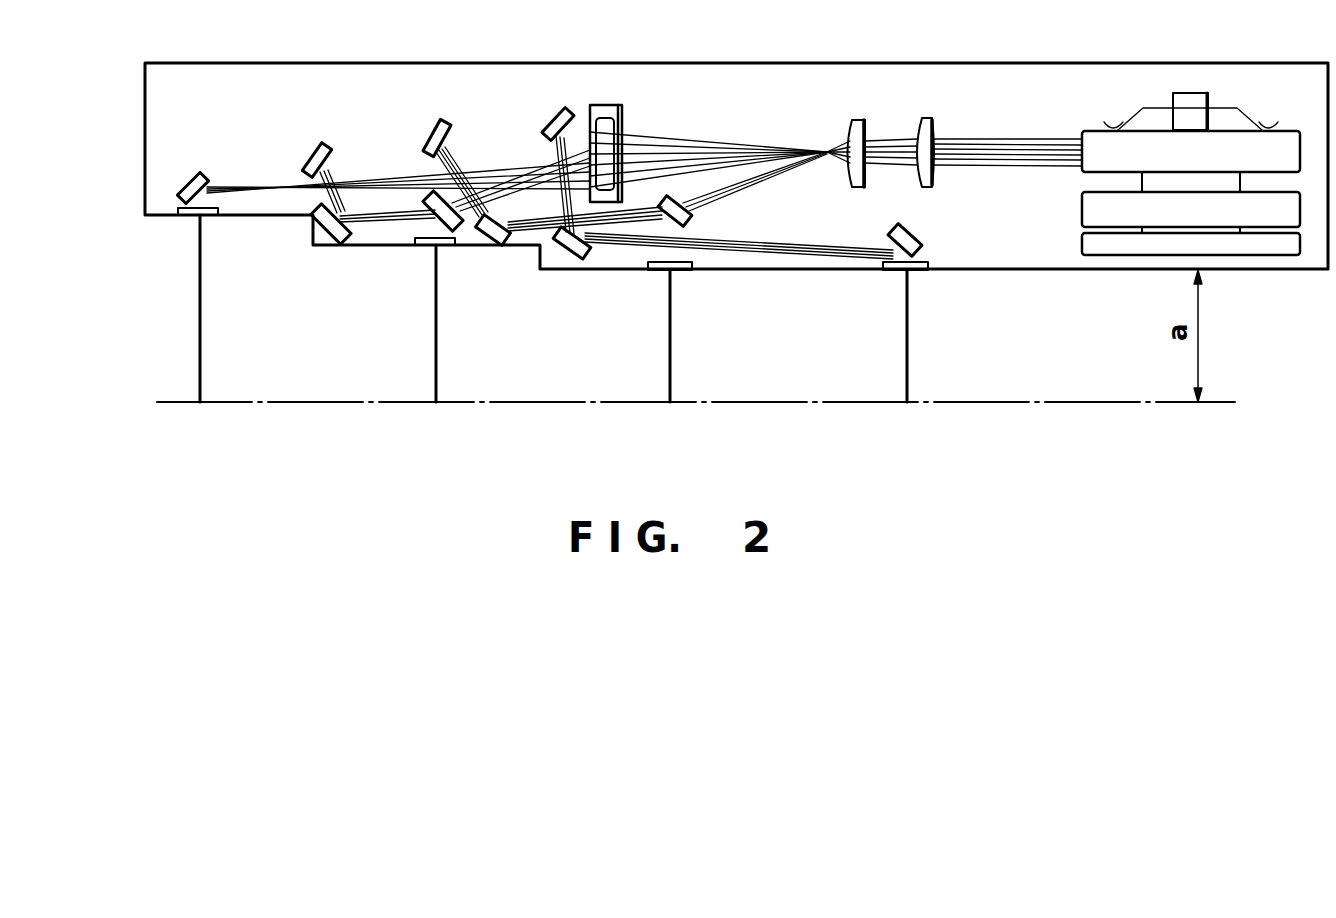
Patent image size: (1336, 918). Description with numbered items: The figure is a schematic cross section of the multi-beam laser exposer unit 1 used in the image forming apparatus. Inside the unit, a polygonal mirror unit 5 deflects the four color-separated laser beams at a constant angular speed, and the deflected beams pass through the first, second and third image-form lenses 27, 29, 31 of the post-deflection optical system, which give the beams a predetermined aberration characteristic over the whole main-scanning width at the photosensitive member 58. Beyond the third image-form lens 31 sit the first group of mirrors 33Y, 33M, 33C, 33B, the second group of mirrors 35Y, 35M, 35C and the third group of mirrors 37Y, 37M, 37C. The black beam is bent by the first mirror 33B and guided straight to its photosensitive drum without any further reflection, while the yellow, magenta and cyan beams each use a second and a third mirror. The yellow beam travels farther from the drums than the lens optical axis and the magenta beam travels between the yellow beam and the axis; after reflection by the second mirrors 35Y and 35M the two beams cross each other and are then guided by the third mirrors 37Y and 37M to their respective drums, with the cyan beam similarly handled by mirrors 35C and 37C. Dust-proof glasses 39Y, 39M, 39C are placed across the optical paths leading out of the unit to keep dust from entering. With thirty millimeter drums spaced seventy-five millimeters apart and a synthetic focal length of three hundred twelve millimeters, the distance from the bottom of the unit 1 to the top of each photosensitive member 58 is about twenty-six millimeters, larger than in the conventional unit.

The multi-beam laser exposer unit 1 is at (1112, 76).
The polygonal mirror unit 5 is at (1190, 103).
The first image-form lens 27 is at (934, 122).
The second image-form lens 29 is at (862, 120).
The third image-form lens 31 is at (624, 110).
The first mirror 33B is at (192, 172).
The first mirror 33C is at (312, 151).
The first mirror 33M is at (432, 123).
The first mirror 33Y is at (546, 120).
The second mirror 35C is at (320, 225).
The second mirror 35M is at (490, 247).
The second mirror 35Y is at (568, 260).
The third mirror 37C is at (432, 196).
The third mirror 37M is at (690, 217).
The third mirror 37Y is at (919, 236).
The dust-proof glass 39C is at (420, 248).
The dust-proof glass 39M is at (683, 274).
The dust-proof glass 39Y is at (920, 274).
The photosensitive member 58 is at (1000, 397).